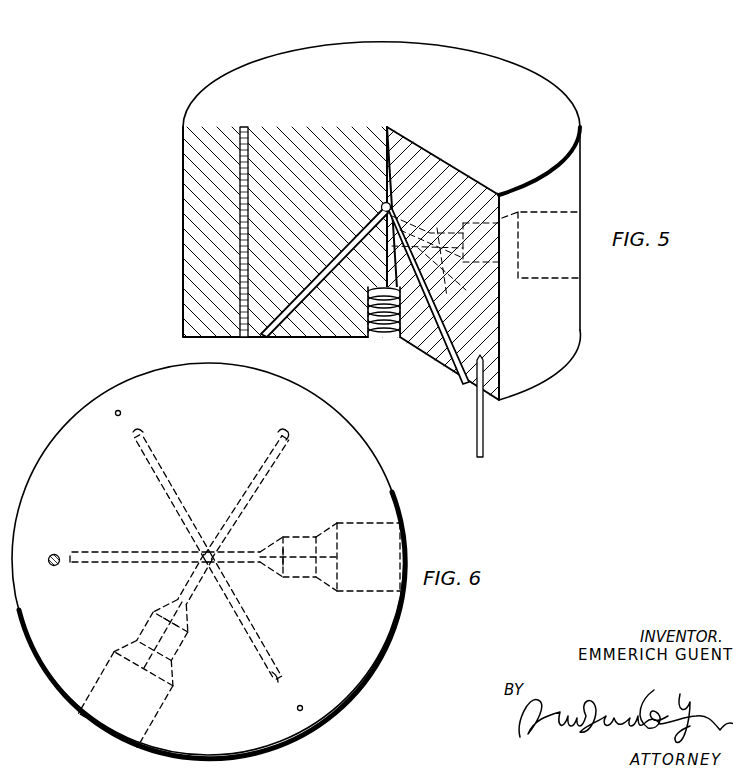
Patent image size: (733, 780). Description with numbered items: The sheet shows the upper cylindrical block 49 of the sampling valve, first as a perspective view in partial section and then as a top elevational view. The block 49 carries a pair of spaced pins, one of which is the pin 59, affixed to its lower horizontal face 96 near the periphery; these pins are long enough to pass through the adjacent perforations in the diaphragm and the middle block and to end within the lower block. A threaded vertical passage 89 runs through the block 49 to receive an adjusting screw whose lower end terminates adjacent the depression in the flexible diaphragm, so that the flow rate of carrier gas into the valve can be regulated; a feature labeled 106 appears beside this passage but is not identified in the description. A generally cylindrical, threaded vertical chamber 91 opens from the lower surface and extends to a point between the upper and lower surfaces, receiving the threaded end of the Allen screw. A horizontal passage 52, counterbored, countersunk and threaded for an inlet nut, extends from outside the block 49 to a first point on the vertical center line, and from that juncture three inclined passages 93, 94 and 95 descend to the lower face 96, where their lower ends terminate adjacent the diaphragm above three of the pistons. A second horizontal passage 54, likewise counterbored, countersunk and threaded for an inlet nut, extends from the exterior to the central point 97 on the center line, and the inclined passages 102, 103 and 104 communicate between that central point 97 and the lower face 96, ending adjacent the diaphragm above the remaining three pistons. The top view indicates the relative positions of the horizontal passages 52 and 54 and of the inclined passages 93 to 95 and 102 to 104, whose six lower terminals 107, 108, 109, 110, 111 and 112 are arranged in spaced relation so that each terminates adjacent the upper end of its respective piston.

In FIG. 5, the upper block 49 is at (183, 298).
In FIG. 6, the upper block 49 is at (65, 424).
In FIG. 5, the horizontal passage 52 is at (568, 208).
In FIG. 6, the horizontal passage 52 is at (380, 522).
In FIG. 6, the horizontal passage 54 is at (104, 668).
In FIG. 5, the pin 59 is at (484, 426).
In FIG. 6, the pin 59 is at (116, 416).
In FIG. 5, the threaded vertical passage 89 is at (246, 127).
In FIG. 6, the threaded vertical passage 89 is at (54, 554).
In FIG. 5, the threaded vertical chamber 91 is at (383, 322).
In FIG. 6, the inclined passage 93 is at (300, 540).
In FIG. 6, the inclined passage 94 is at (146, 462).
In FIG. 6, the inclined passage 95 is at (148, 636).
In FIG. 5, the lower face 96 is at (334, 339).
In FIG. 5, the central point 97 is at (382, 203).
In FIG. 5, the inclined passage 102 is at (276, 332).
In FIG. 6, the inclined passage 102 is at (132, 556).
In FIG. 5, the inclined passage 103 is at (440, 360).
In FIG. 6, the inclined passage 103 is at (258, 622).
In FIG. 5, the inclined passage 104 is at (450, 290).
In FIG. 6, the inclined passage 104 is at (268, 474).
In FIG. 5, the groove 106 is at (238, 208).
In FIG. 6, the lower terminal 107 is at (342, 566).
In FIG. 6, the lower terminal 108 is at (288, 442).
In FIG. 6, the lower terminal 109 is at (134, 440).
In FIG. 6, the lower terminal 110 is at (76, 553).
In FIG. 6, the lower terminal 111 is at (138, 690).
In FIG. 6, the lower terminal 112 is at (278, 672).